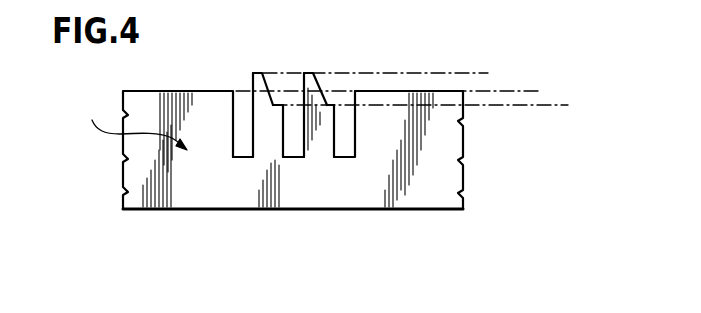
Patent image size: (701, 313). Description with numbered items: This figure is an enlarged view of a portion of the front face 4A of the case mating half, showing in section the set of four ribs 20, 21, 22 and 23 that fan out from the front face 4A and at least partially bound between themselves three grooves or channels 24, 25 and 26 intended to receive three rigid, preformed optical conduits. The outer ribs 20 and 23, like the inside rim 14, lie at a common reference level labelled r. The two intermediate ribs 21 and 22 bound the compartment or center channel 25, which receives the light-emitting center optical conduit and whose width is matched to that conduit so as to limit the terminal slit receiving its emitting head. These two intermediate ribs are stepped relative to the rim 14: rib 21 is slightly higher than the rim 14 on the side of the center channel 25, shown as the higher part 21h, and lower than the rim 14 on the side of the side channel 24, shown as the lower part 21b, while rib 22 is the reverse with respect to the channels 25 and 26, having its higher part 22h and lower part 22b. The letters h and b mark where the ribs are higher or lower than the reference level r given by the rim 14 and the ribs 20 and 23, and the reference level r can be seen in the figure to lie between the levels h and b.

The rim 14 is at (167, 91).
The front face 4A is at (130, 118).
The rib 20 is at (362, 128).
The intermediate rib 21 is at (314, 133).
The higher part of rib 21h is at (310, 72).
The lower part of rib 21b is at (327, 104).
The intermediate rib 22 is at (270, 133).
The higher part of rib 22h is at (262, 73).
The lower part of rib 22b is at (277, 104).
The rib 23 is at (225, 121).
The side channel 24 is at (349, 146).
The center channel 25 is at (294, 148).
The side channel 26 is at (242, 142).
The higher level h is at (482, 73).
The reference level r is at (518, 91).
The lower level b is at (568, 105).